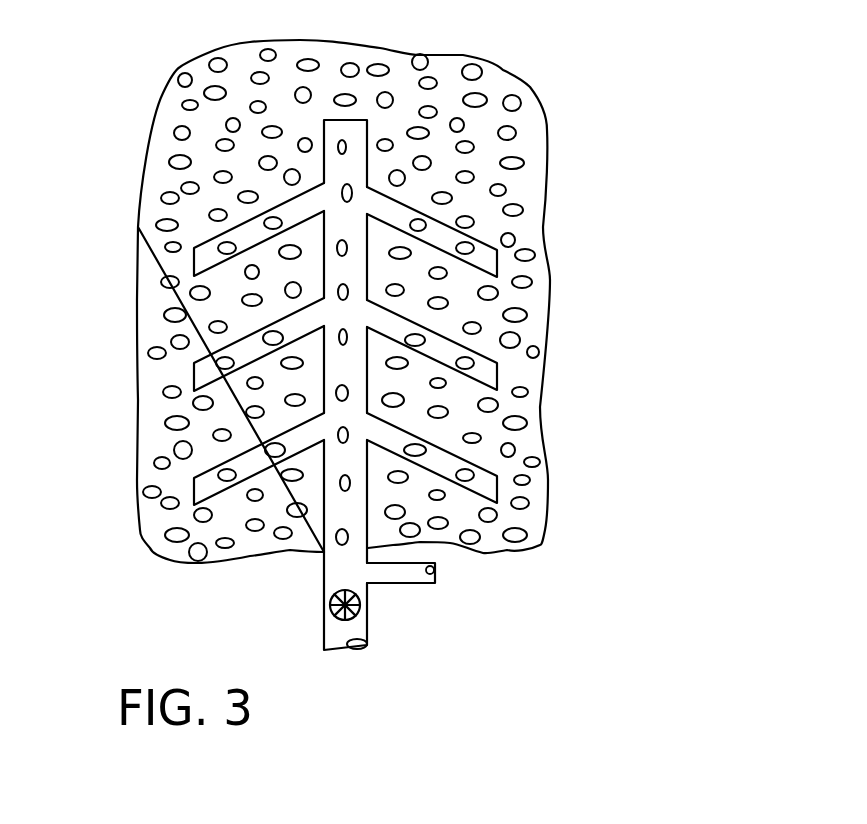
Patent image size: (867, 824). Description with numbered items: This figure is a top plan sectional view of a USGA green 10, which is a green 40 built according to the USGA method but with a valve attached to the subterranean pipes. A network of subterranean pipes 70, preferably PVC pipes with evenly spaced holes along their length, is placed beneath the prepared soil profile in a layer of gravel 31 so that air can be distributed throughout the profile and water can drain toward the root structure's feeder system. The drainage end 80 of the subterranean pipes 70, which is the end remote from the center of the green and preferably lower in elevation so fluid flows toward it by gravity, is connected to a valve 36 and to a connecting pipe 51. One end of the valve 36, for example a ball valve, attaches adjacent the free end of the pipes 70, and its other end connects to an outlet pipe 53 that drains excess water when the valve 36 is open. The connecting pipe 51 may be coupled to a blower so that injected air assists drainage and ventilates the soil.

The USGA green 10 is at (100, 342).
The layer of gravel 31 is at (508, 450).
The subterranean pipes 70 is at (496, 370).
The drainage end 80 is at (333, 632).
The connecting pipe 51 is at (420, 585).
The valve 36 is at (360, 602).
The outlet pipe 53 is at (357, 650).
The green 40 is at (596, 815).